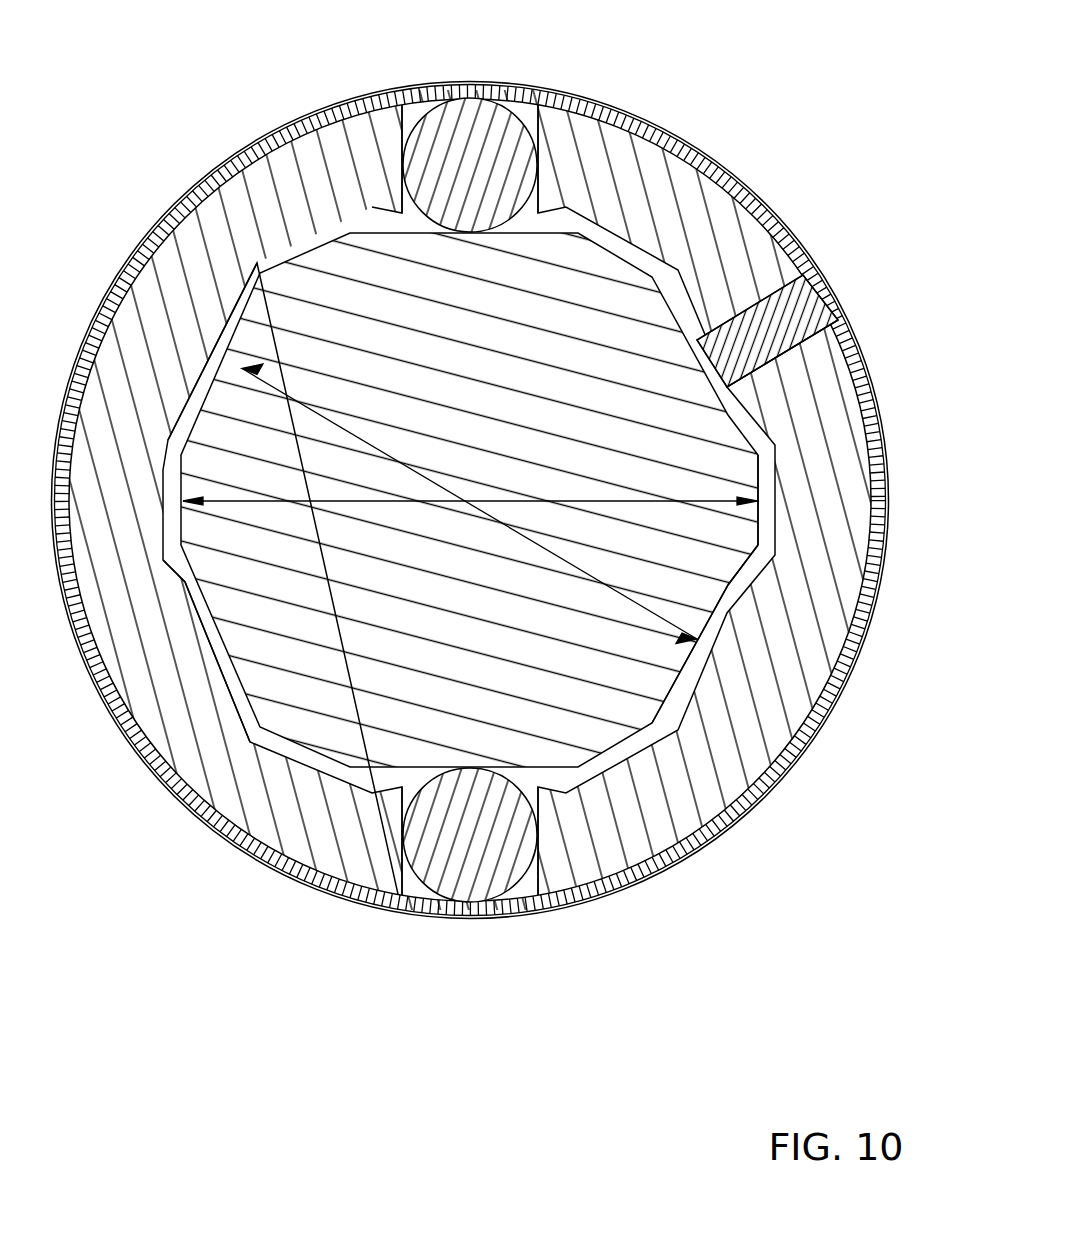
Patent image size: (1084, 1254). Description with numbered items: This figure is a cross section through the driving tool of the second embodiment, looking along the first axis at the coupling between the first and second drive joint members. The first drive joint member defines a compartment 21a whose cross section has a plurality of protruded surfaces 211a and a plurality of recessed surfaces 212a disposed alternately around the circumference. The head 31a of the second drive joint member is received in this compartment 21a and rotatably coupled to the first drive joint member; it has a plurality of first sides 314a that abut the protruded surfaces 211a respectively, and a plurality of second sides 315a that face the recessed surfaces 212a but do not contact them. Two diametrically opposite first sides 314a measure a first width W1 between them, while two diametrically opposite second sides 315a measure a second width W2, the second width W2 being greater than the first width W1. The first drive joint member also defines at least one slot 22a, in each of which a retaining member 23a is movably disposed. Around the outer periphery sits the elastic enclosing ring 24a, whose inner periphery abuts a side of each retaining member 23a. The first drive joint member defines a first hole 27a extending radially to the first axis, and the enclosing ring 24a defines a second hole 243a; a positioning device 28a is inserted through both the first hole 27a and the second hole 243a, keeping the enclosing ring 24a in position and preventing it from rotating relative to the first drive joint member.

The compartment 21a is at (346, 226).
The protruded surfaces 211a is at (190, 583).
The recessed surfaces 212a is at (173, 477).
The slot 22a is at (401, 104).
The retaining member 23a is at (470, 122).
The enclosing ring 24a is at (668, 868).
The second hole 243a is at (800, 335).
The first hole 27a is at (750, 307).
The positioning device 28a is at (762, 350).
The head 31a is at (626, 253).
The first sides 314a is at (681, 714).
The second sides 315a is at (760, 513).
The first width W1 is at (595, 570).
The second width W2 is at (703, 497).